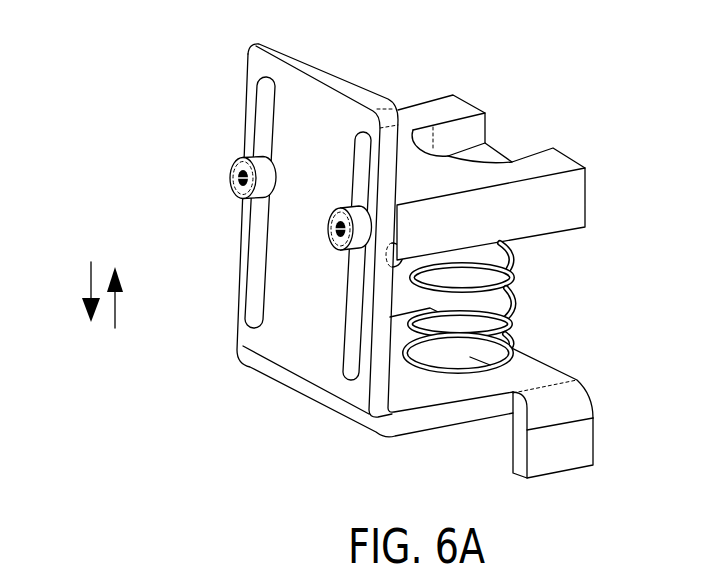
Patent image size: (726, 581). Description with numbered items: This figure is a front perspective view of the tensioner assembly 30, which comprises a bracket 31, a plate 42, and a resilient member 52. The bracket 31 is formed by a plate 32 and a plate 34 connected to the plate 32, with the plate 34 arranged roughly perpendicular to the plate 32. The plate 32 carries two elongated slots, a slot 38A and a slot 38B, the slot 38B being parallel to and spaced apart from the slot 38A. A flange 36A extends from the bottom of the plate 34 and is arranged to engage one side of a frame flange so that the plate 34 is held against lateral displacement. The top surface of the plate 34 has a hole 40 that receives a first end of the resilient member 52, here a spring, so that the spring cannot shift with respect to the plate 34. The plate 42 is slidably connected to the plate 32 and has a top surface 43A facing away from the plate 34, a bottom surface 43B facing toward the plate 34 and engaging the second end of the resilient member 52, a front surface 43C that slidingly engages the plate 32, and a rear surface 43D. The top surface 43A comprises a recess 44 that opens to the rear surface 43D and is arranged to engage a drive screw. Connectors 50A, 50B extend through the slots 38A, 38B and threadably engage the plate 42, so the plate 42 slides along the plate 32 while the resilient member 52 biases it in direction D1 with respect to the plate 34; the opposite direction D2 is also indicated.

The tensioner assembly 30 is at (143, 86).
The bracket 31 is at (297, 60).
The plate 32 is at (288, 307).
The plate 34 is at (438, 418).
The flange 36A is at (583, 447).
The slot 38A is at (342, 344).
The slot 38B is at (254, 251).
The hole 40 is at (470, 357).
The plate 42 is at (570, 210).
The top surface 43A is at (460, 110).
The bottom surface 43B is at (562, 230).
The front surface 43C is at (403, 250).
The rear surface 43D is at (583, 190).
The recess 44 is at (525, 125).
The connector 50A is at (330, 210).
The connector 50B is at (232, 178).
The resilient member 52 is at (517, 302).
The direction D1 is at (115, 317).
The direction D2 is at (91, 277).